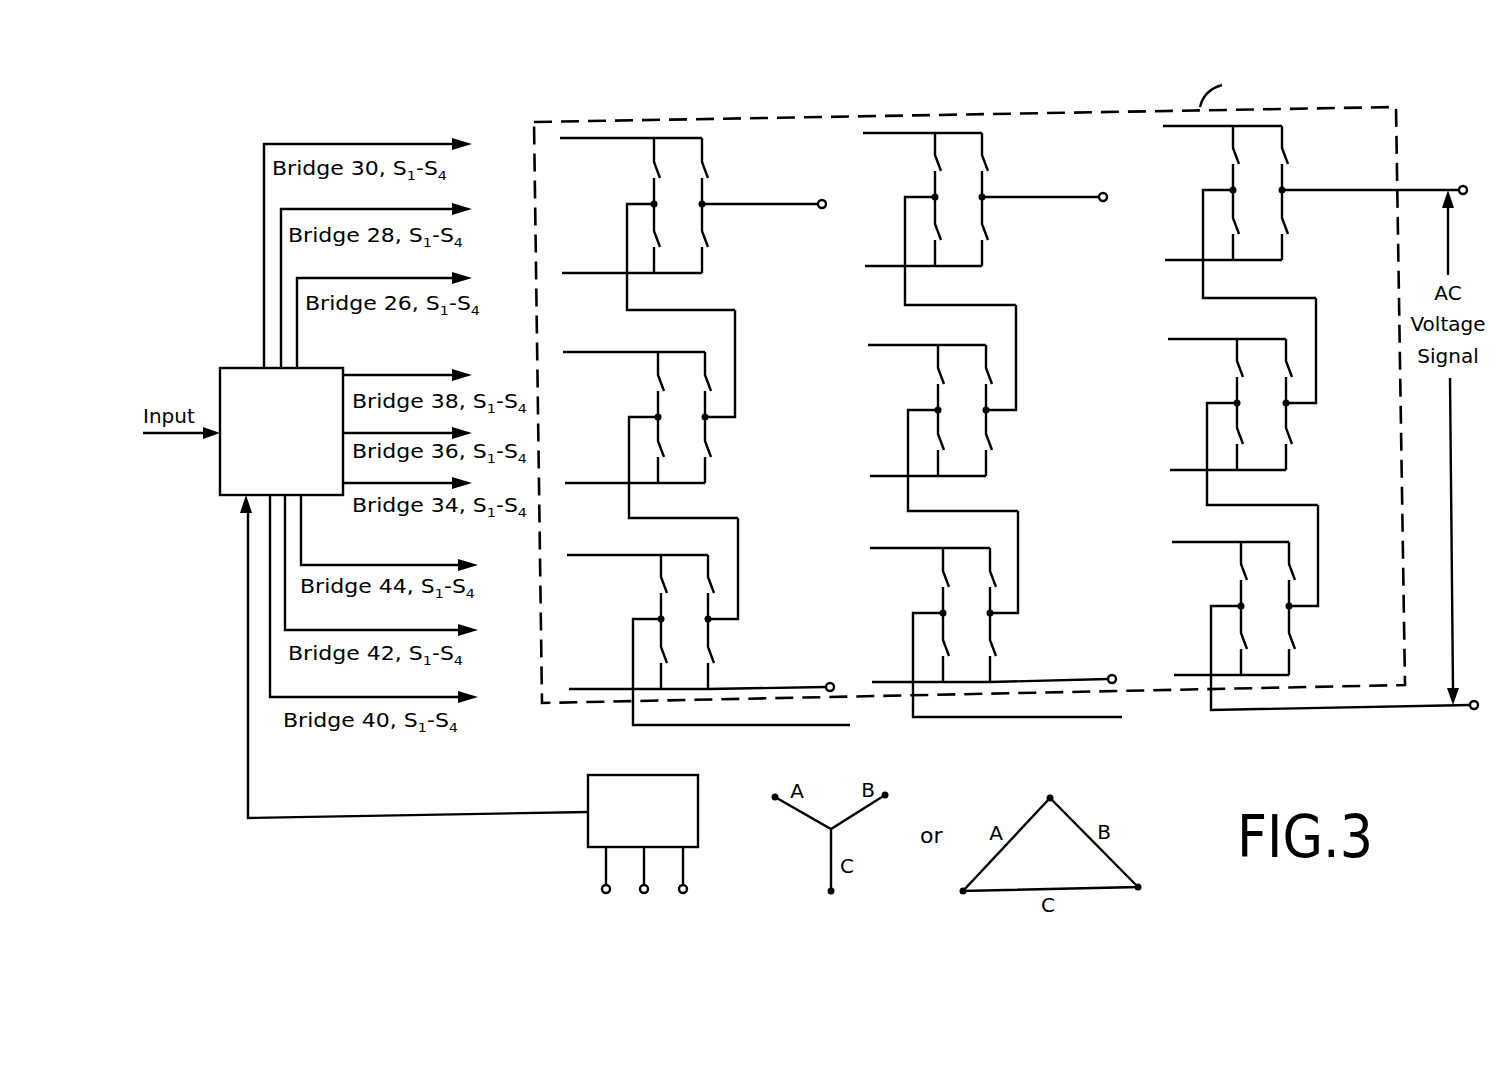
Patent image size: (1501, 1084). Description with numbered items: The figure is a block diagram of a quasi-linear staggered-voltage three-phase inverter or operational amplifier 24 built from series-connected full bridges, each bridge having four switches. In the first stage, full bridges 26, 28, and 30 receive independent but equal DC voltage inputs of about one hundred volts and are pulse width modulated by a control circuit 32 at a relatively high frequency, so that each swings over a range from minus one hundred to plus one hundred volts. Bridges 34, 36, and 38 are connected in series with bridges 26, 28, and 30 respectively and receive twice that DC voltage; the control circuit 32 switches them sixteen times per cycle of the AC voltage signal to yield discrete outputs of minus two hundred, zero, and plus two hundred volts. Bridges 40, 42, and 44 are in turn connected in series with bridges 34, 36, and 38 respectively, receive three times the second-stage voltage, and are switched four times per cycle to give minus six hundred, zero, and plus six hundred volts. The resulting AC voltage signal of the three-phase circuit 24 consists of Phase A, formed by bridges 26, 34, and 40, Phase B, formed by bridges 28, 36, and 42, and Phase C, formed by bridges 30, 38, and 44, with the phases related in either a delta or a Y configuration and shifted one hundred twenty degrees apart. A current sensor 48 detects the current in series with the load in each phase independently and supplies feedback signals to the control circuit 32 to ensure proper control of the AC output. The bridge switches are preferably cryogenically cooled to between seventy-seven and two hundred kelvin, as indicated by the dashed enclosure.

The quasi-linear staggered-voltage 3-phase inverter or operational amplifier 24 is at (947, 82).
The full bridge 26 is at (705, 190).
The full bridge 28 is at (985, 184).
The full bridge 30 is at (1285, 177).
The control circuit 32 is at (247, 368).
The bridge 34 is at (708, 402).
The bridge 36 is at (989, 398).
The bridge 38 is at (1289, 391).
The bridge 40 is at (711, 605).
The bridge 42 is at (993, 600).
The bridge 44 is at (1292, 595).
The current sensor 48 is at (606, 775).